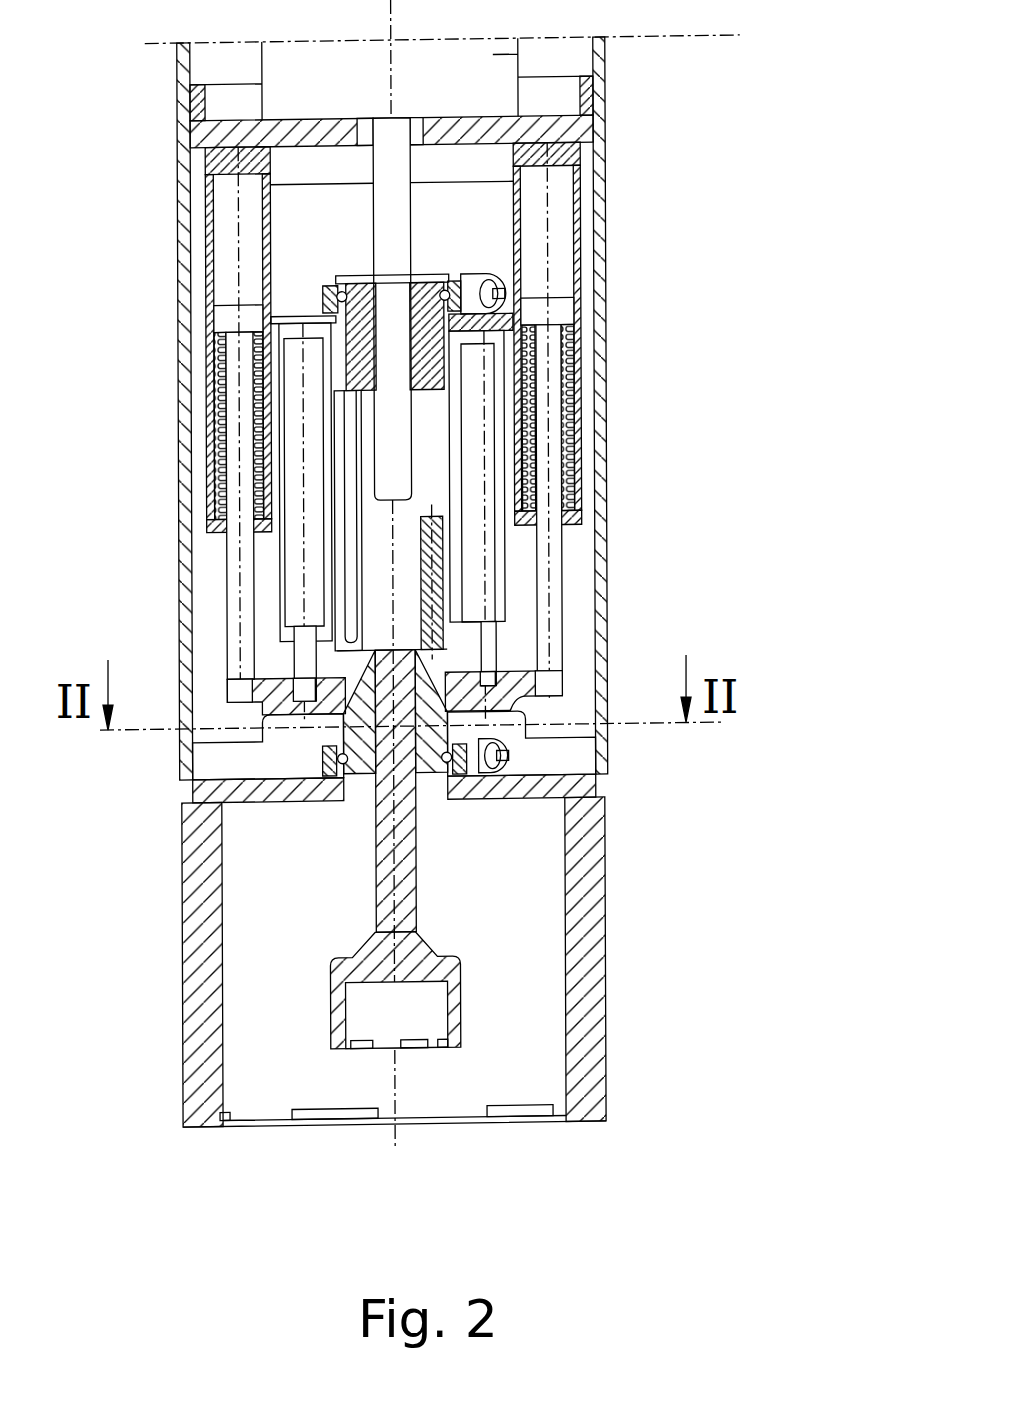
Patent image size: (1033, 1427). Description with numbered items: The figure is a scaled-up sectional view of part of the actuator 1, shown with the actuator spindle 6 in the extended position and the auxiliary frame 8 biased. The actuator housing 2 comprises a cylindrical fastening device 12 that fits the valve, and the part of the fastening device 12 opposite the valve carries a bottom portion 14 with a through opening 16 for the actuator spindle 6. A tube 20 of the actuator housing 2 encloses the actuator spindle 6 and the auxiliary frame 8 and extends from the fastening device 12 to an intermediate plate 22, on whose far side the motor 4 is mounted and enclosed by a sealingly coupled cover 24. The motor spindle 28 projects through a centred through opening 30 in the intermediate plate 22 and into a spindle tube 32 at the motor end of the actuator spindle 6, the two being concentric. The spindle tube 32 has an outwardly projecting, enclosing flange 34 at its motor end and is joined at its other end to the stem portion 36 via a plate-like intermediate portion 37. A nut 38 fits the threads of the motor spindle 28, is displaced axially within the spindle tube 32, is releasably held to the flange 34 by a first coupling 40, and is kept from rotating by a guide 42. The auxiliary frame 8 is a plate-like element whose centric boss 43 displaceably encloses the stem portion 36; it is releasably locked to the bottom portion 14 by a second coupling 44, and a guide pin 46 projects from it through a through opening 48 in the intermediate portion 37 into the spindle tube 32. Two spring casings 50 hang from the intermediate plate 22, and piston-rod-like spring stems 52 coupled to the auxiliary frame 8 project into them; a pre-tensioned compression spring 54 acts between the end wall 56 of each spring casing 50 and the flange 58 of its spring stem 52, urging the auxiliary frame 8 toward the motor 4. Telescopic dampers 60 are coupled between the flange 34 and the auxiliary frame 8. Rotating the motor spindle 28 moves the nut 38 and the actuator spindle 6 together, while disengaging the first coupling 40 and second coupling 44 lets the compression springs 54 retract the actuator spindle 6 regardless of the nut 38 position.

The actuator 1 is at (698, 249).
The actuator housing 2 is at (620, 581).
The motor 4 is at (493, 56).
The actuator spindle 6 is at (428, 842).
The auxiliary frame 8 is at (290, 705).
The fastening device 12 is at (592, 868).
The bottom portion 14 is at (525, 790).
The through opening 16 is at (417, 805).
The tube 20 is at (602, 165).
The intermediate plate 22 is at (586, 128).
The cover 24 is at (600, 66).
The motor spindle 28 is at (405, 160).
The through opening 30 is at (372, 128).
The spindle tube 32 is at (330, 412).
The flange 34 is at (283, 334).
The stem portion 36 is at (380, 817).
The intermediate portion 37 is at (318, 679).
The nut 38 is at (322, 298).
The first coupling 40 is at (335, 283).
The guide 42 is at (345, 444).
The boss 43 is at (330, 754).
The second coupling 44 is at (330, 768).
The guide pin 46 is at (298, 677).
The through opening 48 is at (470, 682).
The spring casing 50 is at (578, 420).
The spring stem 52 is at (548, 388).
The compression spring 54 is at (570, 470).
The end wall 56 is at (558, 520).
The flange 58 is at (555, 318).
The telescopic damper 60 is at (488, 583).